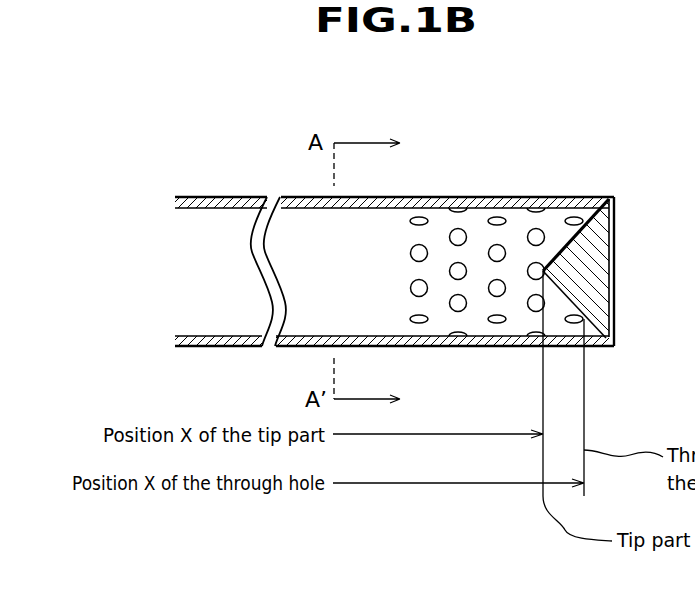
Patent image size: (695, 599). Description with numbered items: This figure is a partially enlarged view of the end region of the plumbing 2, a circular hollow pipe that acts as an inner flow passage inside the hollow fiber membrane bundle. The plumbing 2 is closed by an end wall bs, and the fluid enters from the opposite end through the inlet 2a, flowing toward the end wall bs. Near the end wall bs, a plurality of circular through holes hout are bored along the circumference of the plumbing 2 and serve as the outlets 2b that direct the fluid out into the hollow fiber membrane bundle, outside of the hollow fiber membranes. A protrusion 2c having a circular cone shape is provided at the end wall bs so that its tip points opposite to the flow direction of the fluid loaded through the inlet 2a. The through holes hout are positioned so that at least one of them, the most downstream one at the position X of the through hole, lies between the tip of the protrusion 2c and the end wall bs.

The plumbing 2 is at (243, 361).
The inlet 2a is at (213, 218).
The outlets 2b is at (590, 355).
The protrusion 2c is at (583, 243).
The through holes hout is at (420, 218).
The end wall bs is at (615, 289).